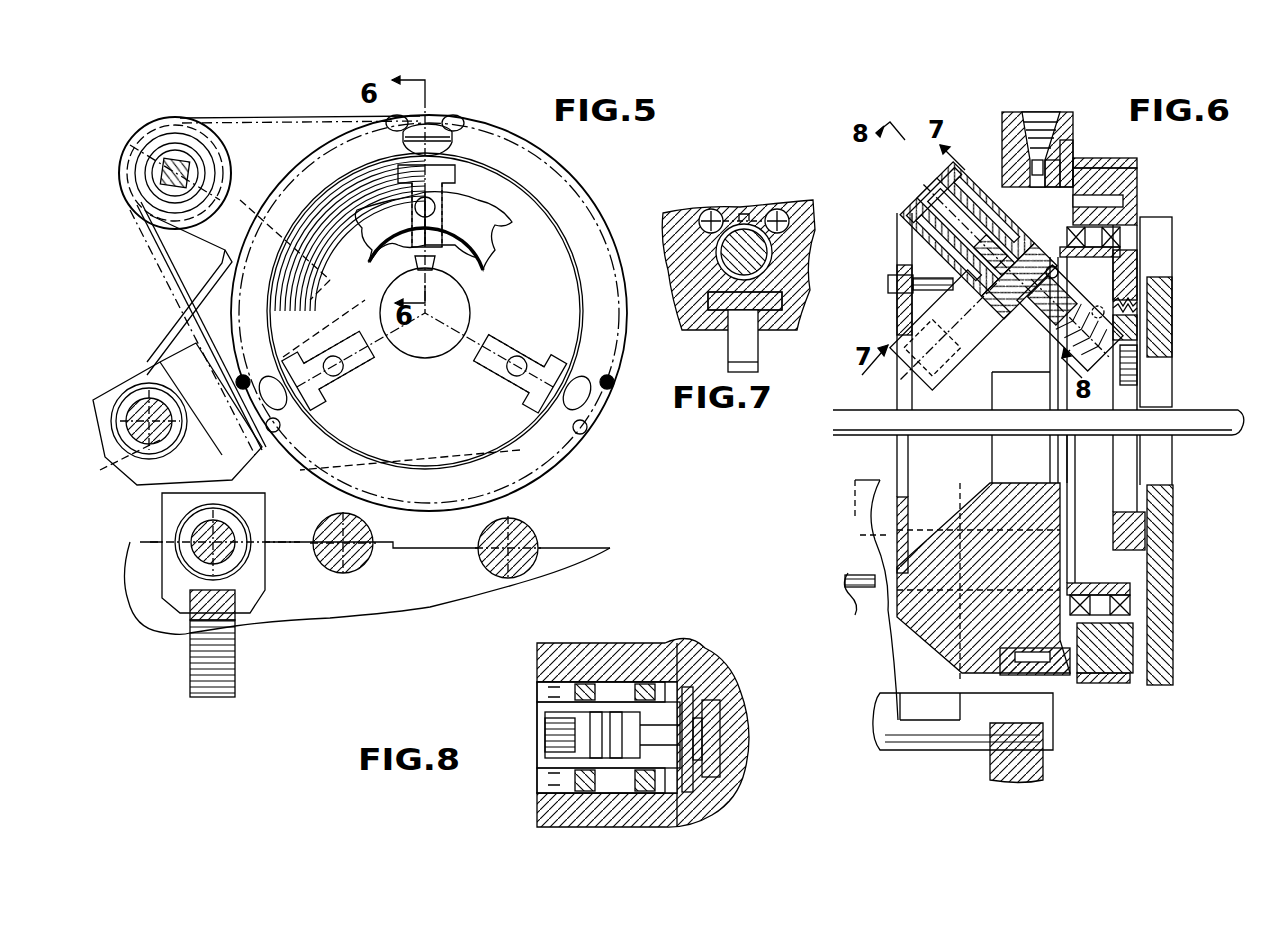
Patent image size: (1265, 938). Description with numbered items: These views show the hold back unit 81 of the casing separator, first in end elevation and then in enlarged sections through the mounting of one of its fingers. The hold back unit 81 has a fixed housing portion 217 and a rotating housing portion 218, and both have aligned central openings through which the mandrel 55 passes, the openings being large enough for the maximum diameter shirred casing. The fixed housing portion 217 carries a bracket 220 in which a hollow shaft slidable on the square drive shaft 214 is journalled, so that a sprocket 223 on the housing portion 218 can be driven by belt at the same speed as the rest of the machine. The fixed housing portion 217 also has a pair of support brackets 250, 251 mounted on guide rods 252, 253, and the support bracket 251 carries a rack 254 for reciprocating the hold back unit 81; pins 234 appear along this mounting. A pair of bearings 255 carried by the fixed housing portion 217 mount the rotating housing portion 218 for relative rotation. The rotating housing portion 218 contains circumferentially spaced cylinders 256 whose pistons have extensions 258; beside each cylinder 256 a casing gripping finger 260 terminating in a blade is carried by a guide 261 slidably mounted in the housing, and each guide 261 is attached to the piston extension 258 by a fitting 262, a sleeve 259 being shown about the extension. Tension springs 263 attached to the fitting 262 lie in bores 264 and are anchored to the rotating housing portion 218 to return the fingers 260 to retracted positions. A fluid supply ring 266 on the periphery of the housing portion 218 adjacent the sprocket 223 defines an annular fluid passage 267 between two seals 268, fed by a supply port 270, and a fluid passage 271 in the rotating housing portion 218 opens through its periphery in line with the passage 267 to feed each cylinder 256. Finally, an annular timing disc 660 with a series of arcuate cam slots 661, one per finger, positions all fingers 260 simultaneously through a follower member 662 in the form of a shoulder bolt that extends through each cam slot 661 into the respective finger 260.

In FIG. 6, the mandrel 55 is at (1183, 410).
In FIG. 5, the hold back unit 81 is at (478, 114).
In FIG. 6, the hold back unit 81 is at (1185, 197).
In FIG. 5, the square drive shaft 214 is at (170, 200).
In FIG. 5, the fixed housing portion 217 is at (185, 325).
In FIG. 6, the fixed housing portion 217 is at (1165, 560).
In FIG. 7, the rotating housing portion 218 is at (815, 225).
In FIG. 8, the rotating housing portion 218 is at (540, 658).
In FIG. 6, the rotating housing portion 218 is at (850, 225).
In FIG. 5, the bracket 220 is at (258, 178).
In FIG. 6, the sprocket 223 is at (1135, 182).
In FIG. 5, the guide pins 234 is at (493, 535).
In FIG. 5, the support bracket 250 is at (98, 395).
In FIG. 5, the support bracket 251 is at (275, 580).
In FIG. 5, the guide rod 252 is at (140, 455).
In FIG. 6, the guide rod 252 is at (845, 580).
In FIG. 5, the guide rod 253 is at (245, 540).
In FIG. 6, the guide rod 253 is at (900, 758).
In FIG. 5, the rack 254 is at (238, 622).
In FIG. 6, the bearings 255 is at (1125, 632).
In FIG. 7, the cylinder 256 is at (715, 245).
In FIG. 6, the cylinder 256 is at (918, 240).
In FIG. 6, the piston extension 258 is at (925, 262).
In FIG. 6, the plunger sleeve 259 is at (925, 255).
In FIG. 7, the casing gripping finger 260 is at (752, 345).
In FIG. 6, the casing gripping finger 260 is at (955, 360).
In FIG. 7, the guide 261 is at (700, 318).
In FIG. 6, the fitting 262 is at (1061, 331).
In FIG. 7, the tension springs 263 is at (708, 210).
In FIG. 8, the tension springs 263 is at (612, 682).
In FIG. 8, the bores 264 is at (685, 690).
In FIG. 6, the fluid supply ring 266 is at (1073, 150).
In FIG. 6, the annular fluid passage 267 is at (1073, 175).
In FIG. 6, the seals 268 is at (1028, 170).
In FIG. 6, the supply port 270 is at (1025, 112).
In FIG. 6, the fluid passage 271 is at (1015, 260).
In FIG. 5, the timing disc 660 is at (458, 275).
In FIG. 6, the timing disc 660 is at (870, 505).
In FIG. 5, the arcuate cam slot 661 is at (395, 268).
In FIG. 5, the follower member 662 is at (530, 270).
In FIG. 6, the follower member 662 is at (892, 292).